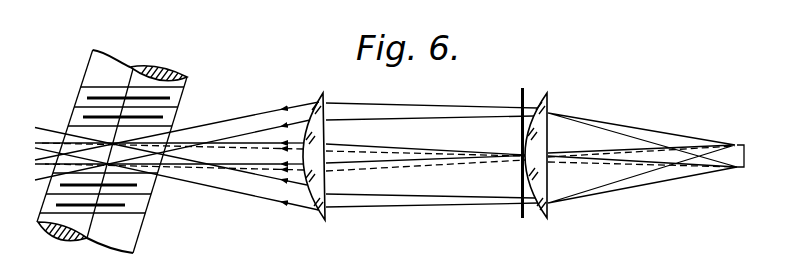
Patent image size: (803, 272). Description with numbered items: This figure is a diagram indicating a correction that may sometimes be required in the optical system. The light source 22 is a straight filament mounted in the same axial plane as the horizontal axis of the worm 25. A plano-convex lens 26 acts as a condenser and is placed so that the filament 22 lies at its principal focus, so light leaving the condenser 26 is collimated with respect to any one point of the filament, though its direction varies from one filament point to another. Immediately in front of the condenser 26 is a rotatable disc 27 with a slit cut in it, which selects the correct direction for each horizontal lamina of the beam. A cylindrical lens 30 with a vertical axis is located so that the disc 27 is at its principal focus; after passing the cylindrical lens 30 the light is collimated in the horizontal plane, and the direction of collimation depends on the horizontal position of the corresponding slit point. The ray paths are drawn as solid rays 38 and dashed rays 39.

The light source 22 is at (736, 144).
The worm 25 is at (170, 102).
The plano-convex lens 26 is at (553, 112).
The disc 27 is at (519, 100).
The cylindrical lens 30 is at (328, 100).
The light rays 38 is at (417, 150).
The light rays (dashed) 39 is at (368, 151).